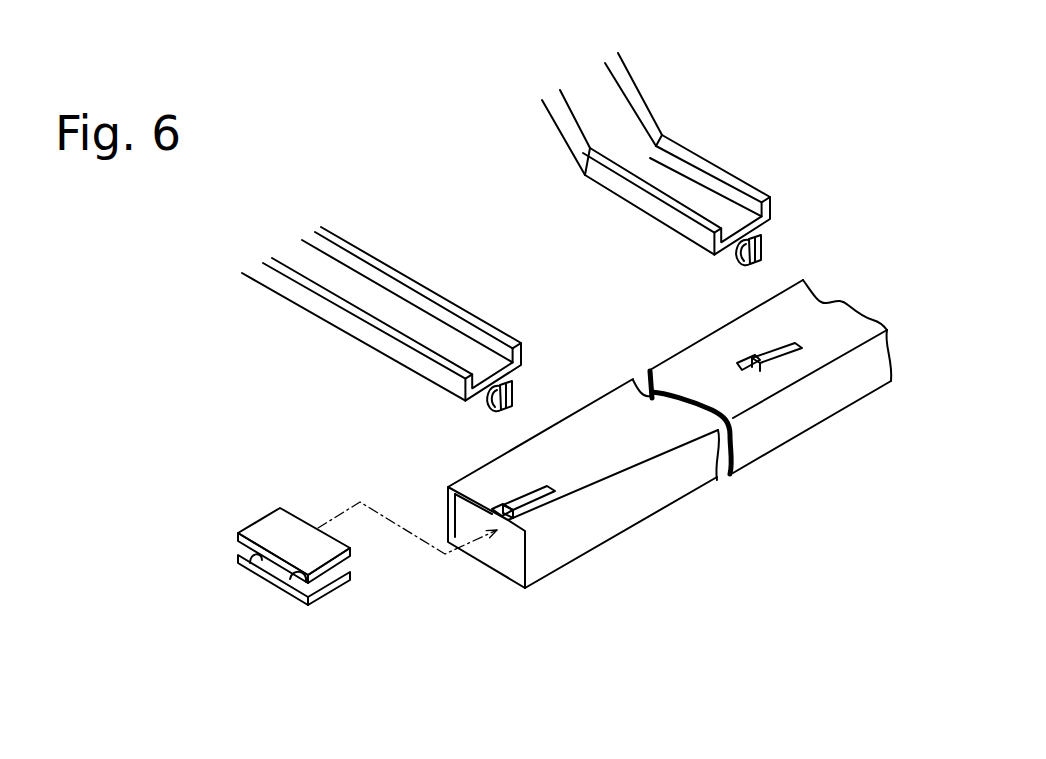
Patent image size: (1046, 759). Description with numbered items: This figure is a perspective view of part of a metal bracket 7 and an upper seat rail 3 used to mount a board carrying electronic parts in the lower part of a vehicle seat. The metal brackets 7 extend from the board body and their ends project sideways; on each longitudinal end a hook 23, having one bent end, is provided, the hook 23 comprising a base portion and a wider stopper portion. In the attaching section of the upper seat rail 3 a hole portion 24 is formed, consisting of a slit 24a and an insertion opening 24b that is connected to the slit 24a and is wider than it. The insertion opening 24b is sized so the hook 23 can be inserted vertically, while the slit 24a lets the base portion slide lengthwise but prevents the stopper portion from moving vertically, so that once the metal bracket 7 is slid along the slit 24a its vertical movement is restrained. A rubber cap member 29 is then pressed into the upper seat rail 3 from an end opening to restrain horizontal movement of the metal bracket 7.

The upper seat rail 3 is at (840, 302).
The metal bracket 7 is at (373, 257).
The hook 23 is at (513, 392).
The hole portion 24 is at (637, 642).
The slit 24a is at (553, 512).
The insertion opening 24b is at (502, 516).
The rubber cap member 29 is at (263, 524).